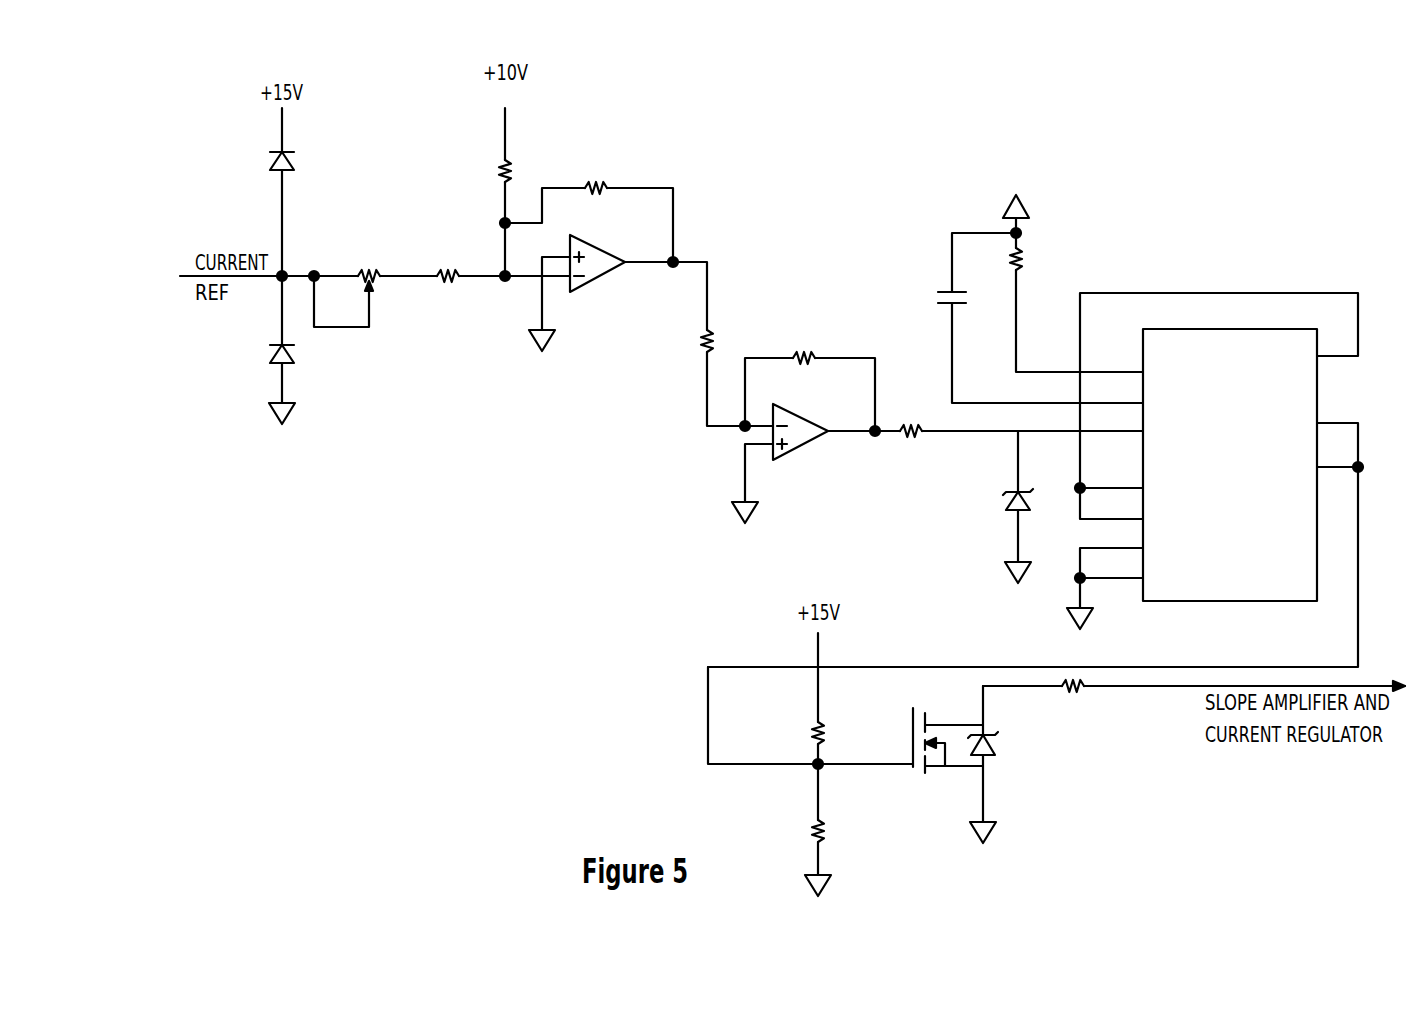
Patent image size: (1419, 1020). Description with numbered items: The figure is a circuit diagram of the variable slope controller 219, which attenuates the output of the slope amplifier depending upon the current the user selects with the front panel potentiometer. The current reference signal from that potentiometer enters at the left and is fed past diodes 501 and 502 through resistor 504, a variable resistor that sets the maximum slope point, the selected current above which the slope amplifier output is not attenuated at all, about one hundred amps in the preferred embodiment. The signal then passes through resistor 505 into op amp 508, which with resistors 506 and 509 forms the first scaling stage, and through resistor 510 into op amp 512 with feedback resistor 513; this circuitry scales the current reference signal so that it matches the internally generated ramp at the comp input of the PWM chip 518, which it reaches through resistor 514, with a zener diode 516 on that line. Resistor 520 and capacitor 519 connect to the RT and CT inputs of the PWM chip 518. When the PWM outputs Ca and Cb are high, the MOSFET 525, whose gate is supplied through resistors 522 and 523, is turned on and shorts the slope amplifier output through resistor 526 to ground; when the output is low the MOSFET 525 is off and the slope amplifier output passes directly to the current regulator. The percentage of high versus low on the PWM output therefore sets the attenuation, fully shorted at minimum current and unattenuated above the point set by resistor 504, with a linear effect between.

The variable slope controller 219 is at (886, 94).
The diode 501 is at (292, 167).
The diode 502 is at (292, 363).
The resistor 504 is at (388, 258).
The resistor 505 is at (449, 268).
The resistor 506 is at (512, 170).
The op amp 508 is at (612, 250).
The resistor 509 is at (616, 172).
The resistor 510 is at (713, 342).
The op amp 512 is at (818, 415).
The resistor 513 is at (824, 342).
The resistor 514 is at (928, 416).
The zener diode 516 is at (1008, 492).
The PWM chip 518 is at (1285, 602).
The capacitor 519 is at (982, 288).
The resistor 520 is at (1024, 258).
The resistor 522 is at (824, 730).
The resistor 523 is at (824, 830).
The MOSFET 525 is at (996, 742).
The resistor 526 is at (1073, 694).